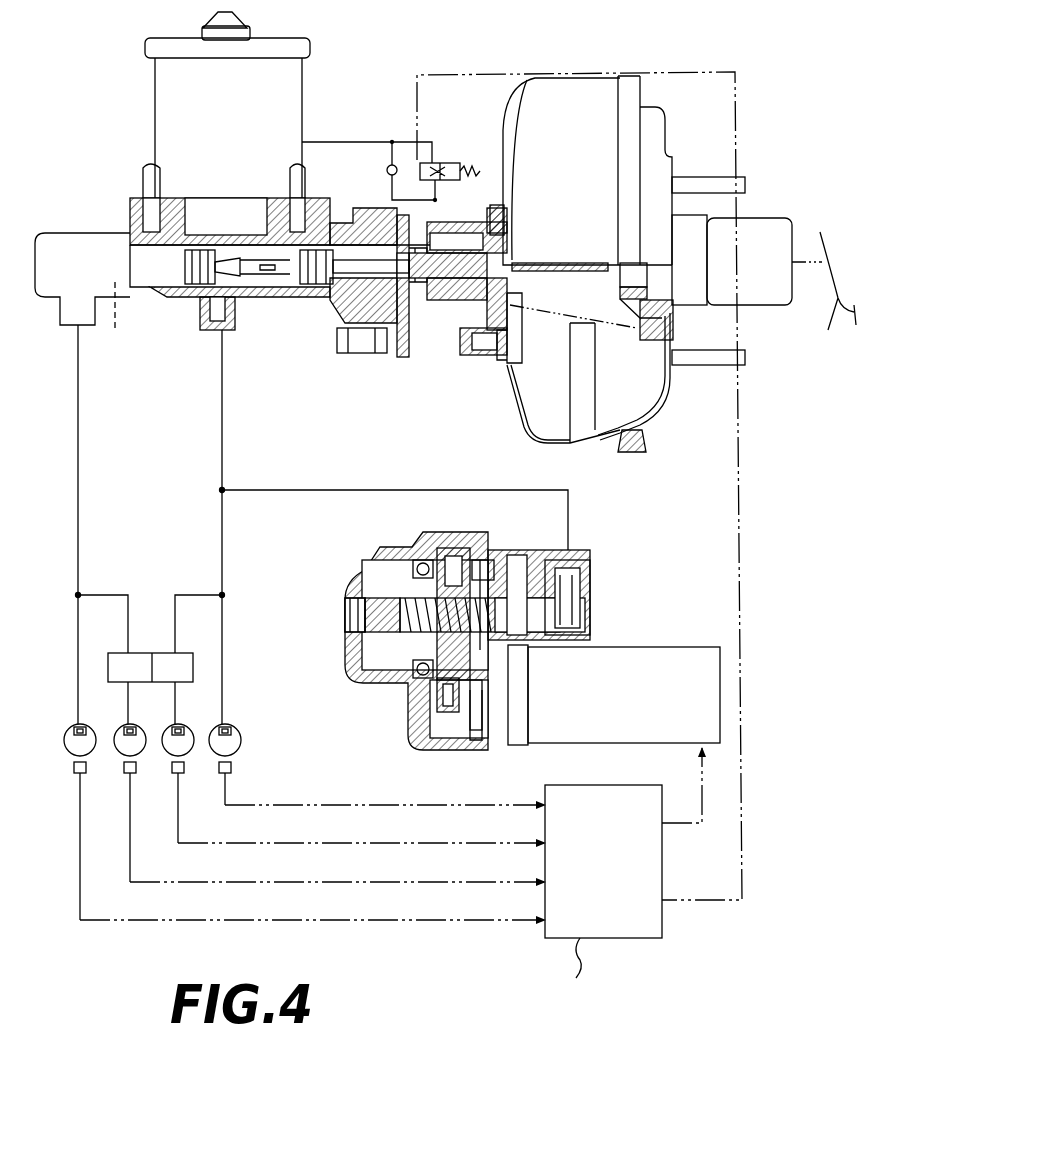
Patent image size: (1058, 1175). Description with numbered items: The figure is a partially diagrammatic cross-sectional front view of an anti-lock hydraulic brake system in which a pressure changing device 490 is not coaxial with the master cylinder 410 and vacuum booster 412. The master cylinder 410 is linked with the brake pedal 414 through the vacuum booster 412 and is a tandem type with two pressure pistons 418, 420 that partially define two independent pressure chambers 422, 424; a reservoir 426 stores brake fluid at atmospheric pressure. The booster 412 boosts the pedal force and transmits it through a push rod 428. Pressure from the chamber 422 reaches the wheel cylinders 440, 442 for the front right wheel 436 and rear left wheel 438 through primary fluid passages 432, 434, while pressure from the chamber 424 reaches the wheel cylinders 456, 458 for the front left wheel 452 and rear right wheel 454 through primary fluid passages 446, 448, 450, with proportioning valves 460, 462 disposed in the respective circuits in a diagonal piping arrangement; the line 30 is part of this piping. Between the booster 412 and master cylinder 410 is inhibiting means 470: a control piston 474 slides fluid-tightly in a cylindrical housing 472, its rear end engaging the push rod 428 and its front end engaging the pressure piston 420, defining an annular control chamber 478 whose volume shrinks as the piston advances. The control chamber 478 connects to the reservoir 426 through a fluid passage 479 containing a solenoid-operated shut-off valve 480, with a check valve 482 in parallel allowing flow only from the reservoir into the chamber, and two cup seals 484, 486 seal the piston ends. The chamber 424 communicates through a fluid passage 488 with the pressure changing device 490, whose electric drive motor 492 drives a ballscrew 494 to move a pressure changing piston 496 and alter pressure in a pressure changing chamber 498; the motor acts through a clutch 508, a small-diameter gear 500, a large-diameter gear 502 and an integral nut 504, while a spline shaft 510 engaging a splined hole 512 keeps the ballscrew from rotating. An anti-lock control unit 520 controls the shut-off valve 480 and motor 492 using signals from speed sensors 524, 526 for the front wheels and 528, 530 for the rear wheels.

The hydraulic line 30 is at (78, 458).
The master cylinder 410 is at (288, 357).
The vacuum booster 412 is at (626, 458).
The brake pedal 414 is at (764, 271).
The pressure piston 418 is at (178, 270).
The pressure piston 420 is at (318, 288).
The pressure chamber 422 is at (82, 290).
The pressure chamber 424 is at (241, 300).
The reservoir 426 is at (297, 122).
The push rod 428 is at (515, 180).
The primary fluid passage 432 is at (128, 626).
The primary fluid passage 434 is at (128, 722).
The front right wheel 436 is at (72, 745).
The rear left wheel 438 is at (143, 748).
The wheel cylinder 440 is at (82, 722).
The wheel cylinder 442 is at (150, 712).
The primary fluid passage 446 is at (222, 392).
The primary fluid passage 448 is at (175, 620).
The primary fluid passage 450 is at (178, 703).
The front left wheel 452 is at (239, 744).
The rear right wheel 454 is at (190, 748).
The wheel cylinder 456 is at (234, 725).
The wheel cylinder 458 is at (185, 722).
The proportioning valve 460 is at (136, 660).
The proportioning valve 462 is at (165, 662).
The inhibiting means 470 is at (422, 132).
The cylindrical housing 472 is at (427, 299).
The control piston 474 is at (448, 283).
The control chamber 478 is at (457, 243).
The fluid passage 479 is at (402, 142).
The solenoid-operated shut-off valve 480 is at (451, 160).
The check valve 482 is at (386, 170).
The cup seal 484 is at (401, 330).
The cup seal 486 is at (490, 305).
The fluid passage 488 is at (333, 479).
The pressure changing device 490 is at (379, 700).
The electric drive motor 492 is at (668, 652).
The ballscrew 494 is at (481, 565).
The pressure changing piston 496 is at (541, 600).
The pressure changing chamber 498 is at (578, 602).
The small-diameter gear 500 is at (445, 712).
The large-diameter gear 502 is at (434, 540).
The nut 504 is at (461, 560).
The clutch 508 is at (477, 732).
The spline shaft 510 is at (368, 625).
The splined hole 512 is at (345, 606).
The anti-lock control unit 520 is at (662, 850).
The speed sensor 524 is at (232, 770).
The speed sensor 526 is at (84, 778).
The speed sensor 528 is at (134, 778).
The speed sensor 530 is at (181, 778).